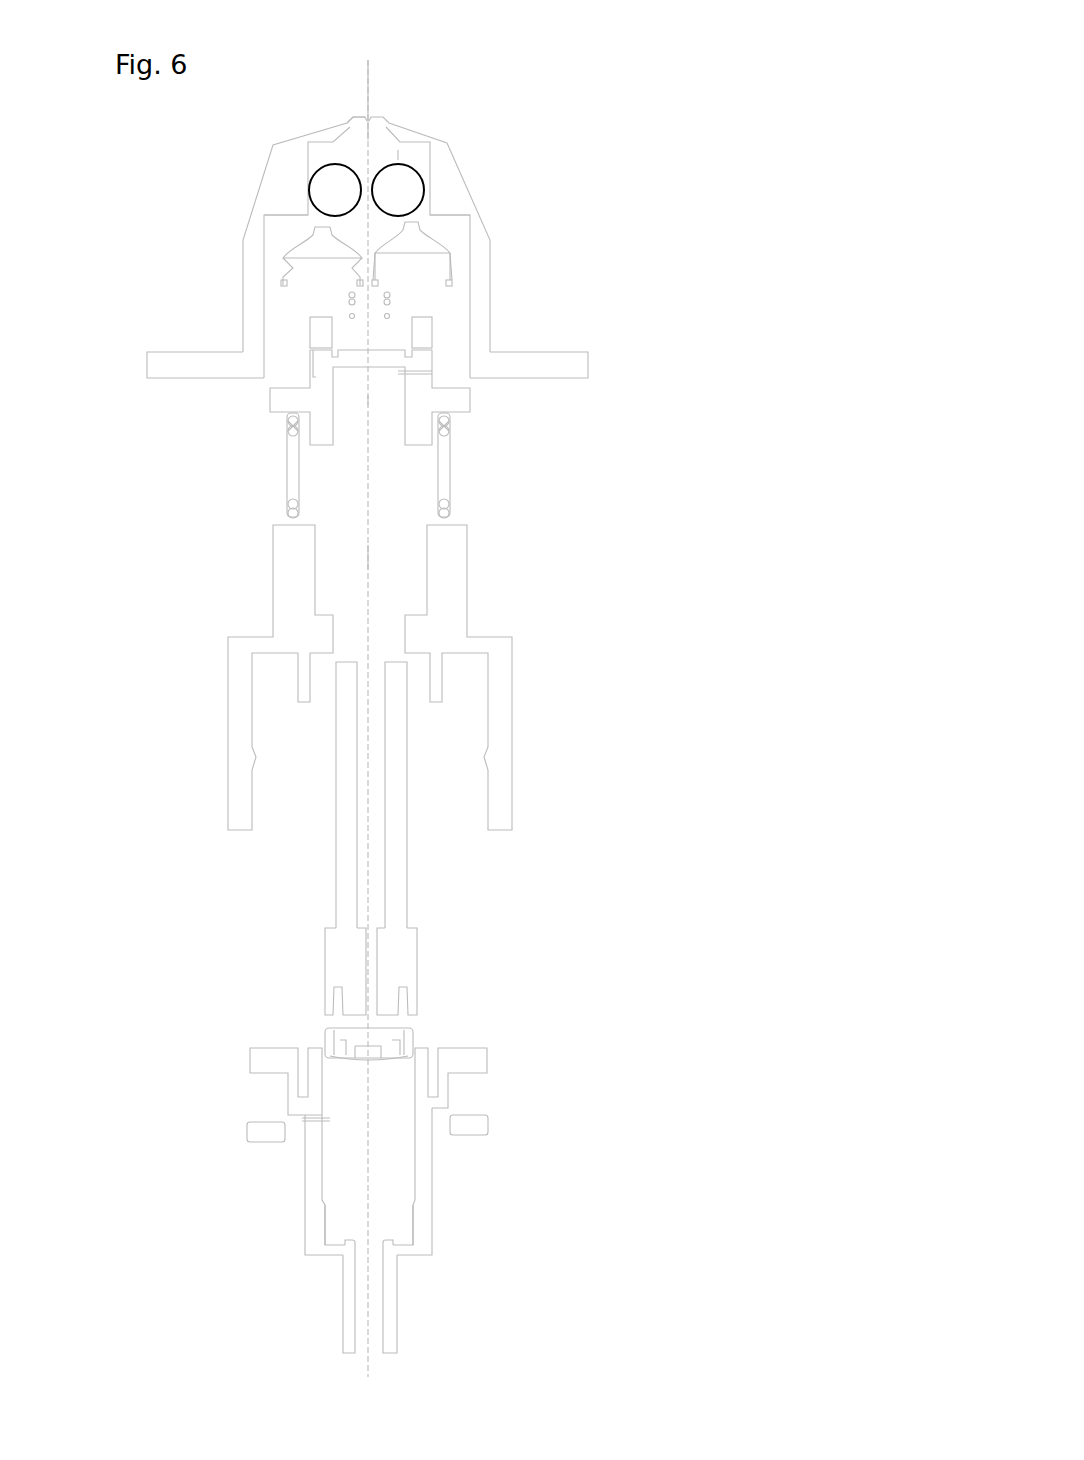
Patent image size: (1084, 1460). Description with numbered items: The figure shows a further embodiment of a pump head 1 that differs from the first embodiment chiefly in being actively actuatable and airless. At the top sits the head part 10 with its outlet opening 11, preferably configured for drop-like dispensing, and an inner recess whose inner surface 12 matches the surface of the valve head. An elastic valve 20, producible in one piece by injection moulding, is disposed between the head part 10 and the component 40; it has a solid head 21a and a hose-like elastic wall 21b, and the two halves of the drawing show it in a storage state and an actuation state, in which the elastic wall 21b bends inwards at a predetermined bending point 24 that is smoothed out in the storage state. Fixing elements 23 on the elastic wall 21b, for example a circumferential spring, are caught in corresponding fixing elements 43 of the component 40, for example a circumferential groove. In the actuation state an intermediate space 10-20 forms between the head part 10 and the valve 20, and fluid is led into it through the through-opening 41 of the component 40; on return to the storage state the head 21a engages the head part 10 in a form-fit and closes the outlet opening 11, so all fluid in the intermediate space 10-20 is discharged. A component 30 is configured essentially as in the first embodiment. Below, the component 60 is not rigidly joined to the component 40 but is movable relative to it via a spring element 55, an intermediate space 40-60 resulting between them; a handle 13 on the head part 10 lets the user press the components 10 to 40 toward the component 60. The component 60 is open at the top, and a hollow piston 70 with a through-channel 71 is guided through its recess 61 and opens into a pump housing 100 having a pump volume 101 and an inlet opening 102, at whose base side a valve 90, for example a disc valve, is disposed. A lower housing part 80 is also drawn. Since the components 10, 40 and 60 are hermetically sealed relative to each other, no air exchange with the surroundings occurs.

The pump head 1 is at (813, 129).
The head part 10 is at (473, 183).
The intermediate space 10-20 is at (398, 150).
The outlet opening 11 is at (383, 100).
The inner surface 12 is at (347, 117).
The handle 13 is at (188, 375).
The elastic valve 20 is at (490, 250).
The head 21a is at (420, 246).
The elastic wall 21b is at (468, 269).
The fixing elements 23 is at (460, 287).
The predetermined bending point 24 is at (268, 262).
The component 30 is at (393, 300).
The component 40 is at (470, 398).
The intermediate space 40-60 is at (356, 408).
The through-opening 41 is at (290, 336).
The fixing elements 43 is at (431, 351).
The spring element 55 is at (450, 497).
The component 60 is at (467, 598).
The recess 61 is at (352, 558).
The hollow piston 70 is at (407, 860).
The through-channel 71 is at (349, 737).
The base housing 80 is at (488, 1125).
The valve 90 is at (413, 1038).
The pump housing 100 is at (432, 1227).
The pump volume 101 is at (355, 1201).
The inlet opening 102 is at (368, 1343).